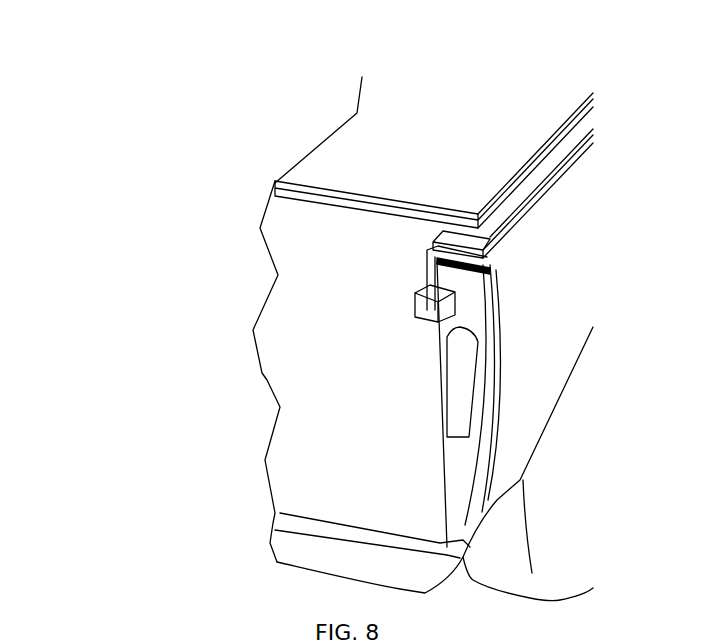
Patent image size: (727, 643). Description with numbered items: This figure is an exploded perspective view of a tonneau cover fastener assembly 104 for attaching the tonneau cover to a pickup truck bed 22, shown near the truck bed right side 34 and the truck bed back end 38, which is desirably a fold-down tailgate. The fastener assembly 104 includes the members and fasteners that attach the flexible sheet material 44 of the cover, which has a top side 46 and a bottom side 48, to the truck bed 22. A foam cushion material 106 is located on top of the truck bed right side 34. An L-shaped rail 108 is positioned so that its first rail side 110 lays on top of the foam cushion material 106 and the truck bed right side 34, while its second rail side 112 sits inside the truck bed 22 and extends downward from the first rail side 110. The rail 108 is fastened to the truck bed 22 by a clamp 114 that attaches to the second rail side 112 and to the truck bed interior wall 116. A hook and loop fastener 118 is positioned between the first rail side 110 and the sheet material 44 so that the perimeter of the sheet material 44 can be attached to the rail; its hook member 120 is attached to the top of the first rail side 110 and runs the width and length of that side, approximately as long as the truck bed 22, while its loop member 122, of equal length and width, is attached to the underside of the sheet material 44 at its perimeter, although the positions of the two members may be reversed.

The truck bed 22 is at (573, 257).
The truck bed right side 34 is at (573, 298).
The truck bed back end 38 is at (397, 512).
The flexible sheet material 44 is at (376, 177).
The top side 46 is at (303, 181).
The bottom side 48 is at (270, 185).
The tonneau cover fastener assembly 104 is at (148, 358).
The foam cushion material 106 is at (441, 262).
The rail 108 is at (427, 278).
The first rail side 110 is at (490, 268).
The second rail side 112 is at (490, 270).
The clamp 114 is at (425, 317).
The truck bed interior wall 116 is at (437, 410).
The hook and loop fastener 118 is at (592, 128).
The hook member 120 is at (433, 250).
The loop member 122 is at (440, 228).